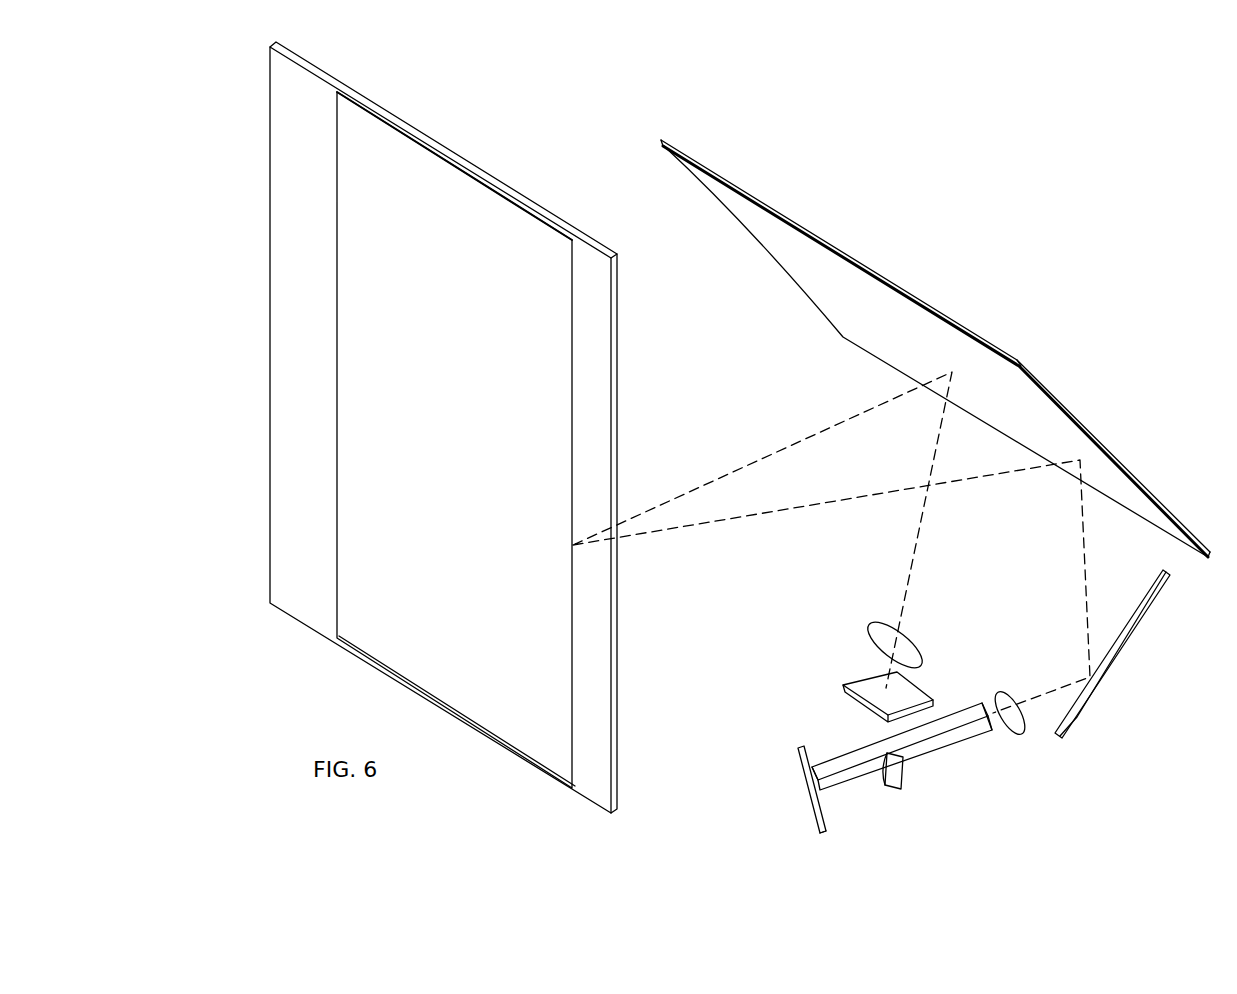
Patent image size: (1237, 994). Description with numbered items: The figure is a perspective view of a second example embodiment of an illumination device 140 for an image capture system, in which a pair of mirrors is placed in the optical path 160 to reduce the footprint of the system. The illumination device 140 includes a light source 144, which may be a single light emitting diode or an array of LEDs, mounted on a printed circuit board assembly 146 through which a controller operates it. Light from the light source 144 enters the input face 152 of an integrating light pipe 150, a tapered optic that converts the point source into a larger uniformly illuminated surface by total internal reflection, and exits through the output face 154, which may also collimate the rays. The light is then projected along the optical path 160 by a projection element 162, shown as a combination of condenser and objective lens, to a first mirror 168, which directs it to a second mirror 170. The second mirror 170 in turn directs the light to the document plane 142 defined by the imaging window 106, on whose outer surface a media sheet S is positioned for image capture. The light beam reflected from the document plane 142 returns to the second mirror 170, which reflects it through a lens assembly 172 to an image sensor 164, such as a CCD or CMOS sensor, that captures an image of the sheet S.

The imaging window 106 is at (355, 86).
The document plane 142 is at (270, 218).
The media sheet S is at (573, 308).
The second mirror 170 is at (1090, 430).
The optical path 160 is at (1085, 575).
The first mirror 168 is at (1135, 627).
The lens assembly 172 is at (878, 626).
The image sensor 164 is at (846, 683).
The projection element 162 is at (1000, 692).
The illumination device 140 is at (888, 768).
The integrating light pipe 150 is at (863, 745).
The output face 154 is at (992, 732).
The light source 144 is at (834, 796).
The input face 152 is at (805, 778).
The printed circuit board assembly 146 is at (820, 826).